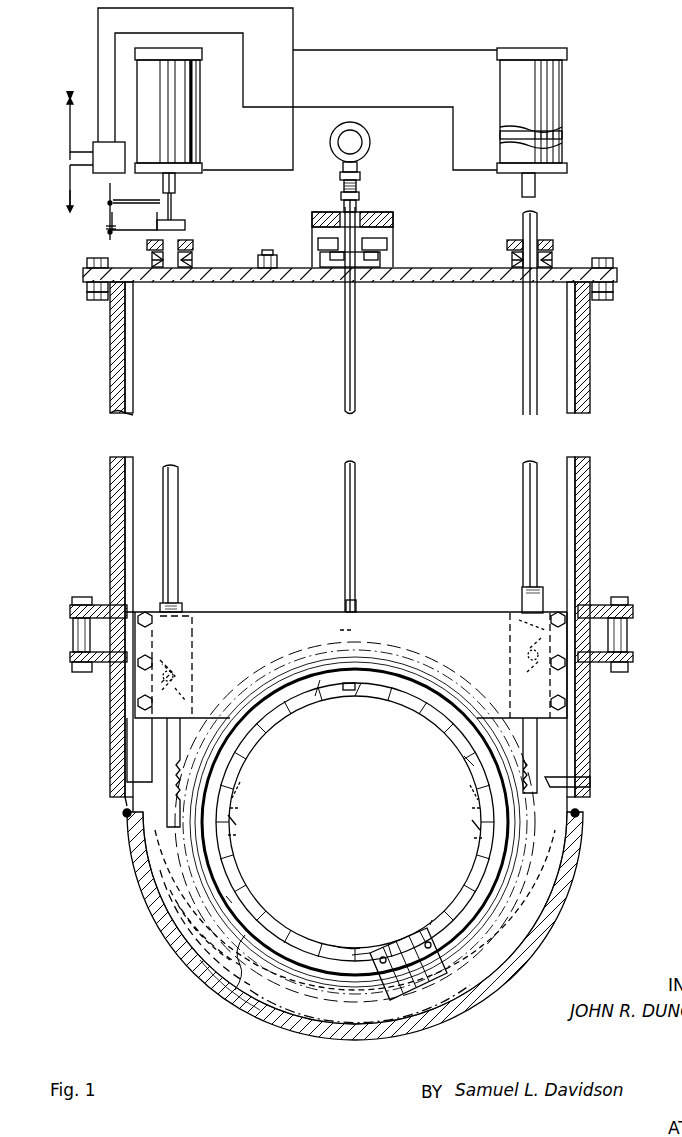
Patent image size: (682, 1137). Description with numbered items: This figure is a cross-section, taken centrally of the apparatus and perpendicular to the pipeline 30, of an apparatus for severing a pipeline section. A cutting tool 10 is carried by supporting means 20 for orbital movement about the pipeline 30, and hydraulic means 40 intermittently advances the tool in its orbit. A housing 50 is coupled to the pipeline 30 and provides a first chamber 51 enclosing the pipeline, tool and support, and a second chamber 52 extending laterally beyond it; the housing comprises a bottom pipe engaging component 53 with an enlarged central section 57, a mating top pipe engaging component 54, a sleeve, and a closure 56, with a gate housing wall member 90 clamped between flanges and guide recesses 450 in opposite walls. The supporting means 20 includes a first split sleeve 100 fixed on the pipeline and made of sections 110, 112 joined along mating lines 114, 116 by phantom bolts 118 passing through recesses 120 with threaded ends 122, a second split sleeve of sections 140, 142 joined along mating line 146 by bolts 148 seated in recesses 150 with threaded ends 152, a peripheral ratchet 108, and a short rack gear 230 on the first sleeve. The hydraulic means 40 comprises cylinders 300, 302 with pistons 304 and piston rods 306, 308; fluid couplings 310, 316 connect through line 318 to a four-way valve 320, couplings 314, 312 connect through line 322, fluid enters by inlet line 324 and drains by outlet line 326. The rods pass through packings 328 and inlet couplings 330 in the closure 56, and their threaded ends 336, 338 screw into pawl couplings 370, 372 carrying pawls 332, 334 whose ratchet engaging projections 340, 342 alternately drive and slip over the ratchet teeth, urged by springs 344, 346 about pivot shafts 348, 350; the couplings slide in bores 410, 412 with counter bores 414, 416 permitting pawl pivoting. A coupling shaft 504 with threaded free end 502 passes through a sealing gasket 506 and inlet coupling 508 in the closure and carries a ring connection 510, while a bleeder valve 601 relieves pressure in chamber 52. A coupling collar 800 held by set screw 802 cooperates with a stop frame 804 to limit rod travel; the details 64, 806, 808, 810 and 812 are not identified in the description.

The cutting tool means 10 is at (452, 972).
The means for supporting the cutting tool 20 is at (492, 905).
The pipeline 30 is at (268, 722).
The hydraulic means 40 is at (570, 200).
The housing 50 is at (585, 352).
The first chamber 51 is at (542, 838).
The second chamber 52 is at (505, 447).
The bottom pipe engaging component 53 is at (470, 985).
The top pipe engaging component 54 is at (118, 738).
The closure member 56 is at (440, 276).
The enlarged central section 57 is at (410, 1016).
The pivot 64 is at (580, 815).
The gate housing wall member 90 is at (610, 632).
The first split sleeve 100 is at (232, 880).
The ratchet 108 is at (155, 868).
The section 110 is at (312, 701).
The section 112 is at (355, 945).
The mating line 114 is at (230, 820).
The mating line 116 is at (470, 824).
The bolts 118 is at (234, 806).
The recesses 120 is at (238, 785).
The threaded ends 122 is at (234, 836).
The section 140 is at (268, 700).
The section 142 is at (235, 997).
The mating line 146 is at (220, 895).
The bolts 148 is at (182, 930).
The recesses 150 is at (175, 895).
The threaded ends 152 is at (192, 948).
The rack gear 230 is at (350, 692).
The cylinder 300 is at (200, 125).
The cylinder 302 is at (563, 112).
The piston 304 is at (563, 138).
The piston rod 306 is at (522, 190).
The piston rod 308 is at (176, 185).
The fluid coupling 310 is at (200, 50).
The fluid coupling 312 is at (497, 50).
The fluid coupling 314 is at (203, 168).
The fluid coupling 316 is at (497, 172).
The fluid line 318 is at (115, 60).
The four-way valve 320 is at (98, 142).
The fluid line 322 is at (98, 33).
The fluid inlet line 324 is at (70, 118).
The fluid outlet line 326 is at (70, 180).
The packings 328 is at (193, 245).
The inlet couplings 330 is at (192, 258).
The pawl 332 is at (165, 767).
The pawl 334 is at (556, 757).
The threaded end 336 is at (180, 600).
The threaded end 338 is at (524, 586).
The ratchet engaging projection 340 is at (180, 828).
The ratchet engaging projection 342 is at (546, 782).
The spring 344 is at (580, 684).
The spring 346 is at (170, 684).
The pawl pivot shaft 348 is at (130, 672).
The pawl pivot shaft 350 is at (522, 664).
The pawl coupling 370 is at (110, 582).
The pawl coupling 372 is at (525, 626).
The bore 410 is at (190, 616).
The bore 412 is at (510, 622).
The counter bore 414 is at (165, 664).
The counter bore 416 is at (508, 658).
The guide recesses 450 is at (125, 493).
The free end 502 is at (357, 614).
The coupling shaft 504 is at (356, 350).
The sealing gasket 506 is at (375, 238).
The inlet coupling 508 is at (390, 265).
The ring connection 510 is at (372, 140).
The bleeder valve 601 is at (268, 250).
The coupling collar 800 is at (134, 217).
The set screw 802 is at (185, 224).
The stop frame 804 is at (97, 222).
The contact 806 is at (110, 232).
The contact 808 is at (130, 236).
The bar 810 is at (122, 200).
The wire 812 is at (110, 200).